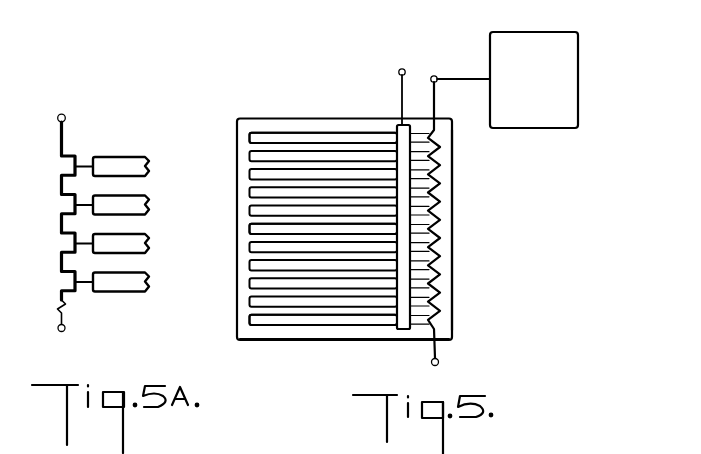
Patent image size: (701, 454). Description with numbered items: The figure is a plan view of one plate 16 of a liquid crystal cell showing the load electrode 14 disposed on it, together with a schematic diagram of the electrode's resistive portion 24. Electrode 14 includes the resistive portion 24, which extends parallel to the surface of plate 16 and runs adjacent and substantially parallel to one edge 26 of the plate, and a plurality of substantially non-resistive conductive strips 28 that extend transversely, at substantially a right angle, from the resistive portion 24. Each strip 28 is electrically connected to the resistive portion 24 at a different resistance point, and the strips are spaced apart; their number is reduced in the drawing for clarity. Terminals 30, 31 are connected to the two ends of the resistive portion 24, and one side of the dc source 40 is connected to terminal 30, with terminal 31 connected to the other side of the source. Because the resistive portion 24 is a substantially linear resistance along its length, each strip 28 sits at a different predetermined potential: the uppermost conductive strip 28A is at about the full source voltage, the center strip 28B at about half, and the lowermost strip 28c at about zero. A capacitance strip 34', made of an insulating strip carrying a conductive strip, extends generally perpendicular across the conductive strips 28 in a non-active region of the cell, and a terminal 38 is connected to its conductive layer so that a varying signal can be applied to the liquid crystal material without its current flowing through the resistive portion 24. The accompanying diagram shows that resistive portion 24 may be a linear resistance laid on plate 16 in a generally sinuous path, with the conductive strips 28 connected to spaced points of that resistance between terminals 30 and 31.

In FIG. 5, the electrode 14 is at (355, 333).
In FIG. 5, the plate 16 is at (443, 255).
In FIG. 5, the resistive portion 24 is at (440, 153).
In FIG. 5A, the resistive portion 24 is at (60, 140).
In FIG. 5, the edge 26 is at (453, 225).
In FIG. 5, the conductive strips 28 is at (249, 156).
In FIG. 5A, the conductive strips 28 is at (122, 163).
In FIG. 5, the uppermost conductive strip 28A is at (258, 132).
In FIG. 5, the center strip 28B is at (251, 226).
In FIG. 5, the lowermost strip 28c is at (260, 327).
In FIG. 5, the terminal 30 is at (435, 75).
In FIG. 5A, the terminal 30 is at (65, 115).
In FIG. 5, the terminal 31 is at (439, 362).
In FIG. 5A, the terminal 31 is at (63, 332).
In FIG. 5, the capacitance strip 34' is at (452, 227).
In FIG. 5, the terminal 38 is at (402, 68).
In FIG. 5, the dc source 40 is at (490, 43).